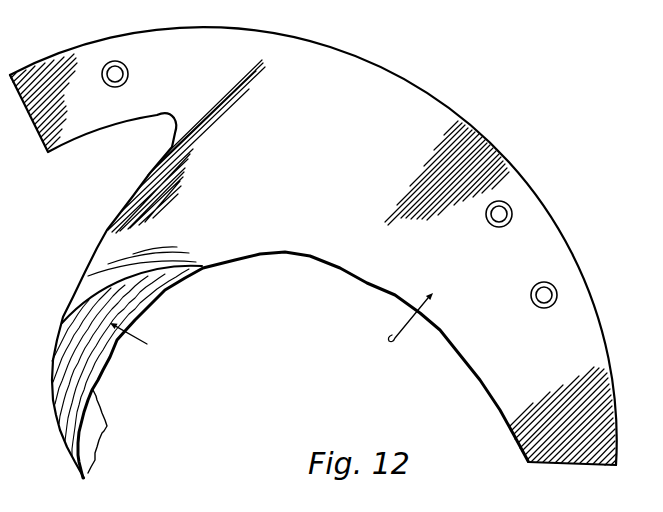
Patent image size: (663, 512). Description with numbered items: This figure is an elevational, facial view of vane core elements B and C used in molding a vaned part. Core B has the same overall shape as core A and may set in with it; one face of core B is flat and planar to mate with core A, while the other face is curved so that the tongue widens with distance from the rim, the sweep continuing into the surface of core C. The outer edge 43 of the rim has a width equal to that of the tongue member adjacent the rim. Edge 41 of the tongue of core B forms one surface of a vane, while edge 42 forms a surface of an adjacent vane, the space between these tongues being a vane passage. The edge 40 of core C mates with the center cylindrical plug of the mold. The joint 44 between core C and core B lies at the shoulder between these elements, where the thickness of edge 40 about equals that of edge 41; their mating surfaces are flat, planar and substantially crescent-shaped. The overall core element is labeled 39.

The blade segment body 39 is at (313, 259).
The edge of core C 40 is at (109, 427).
The edge of the tongue of core B 41 is at (463, 363).
The edge of the tongue of core B 42 is at (108, 216).
The outer edge of the rim 43 is at (596, 319).
The joint between core C and core B 44 is at (199, 267).